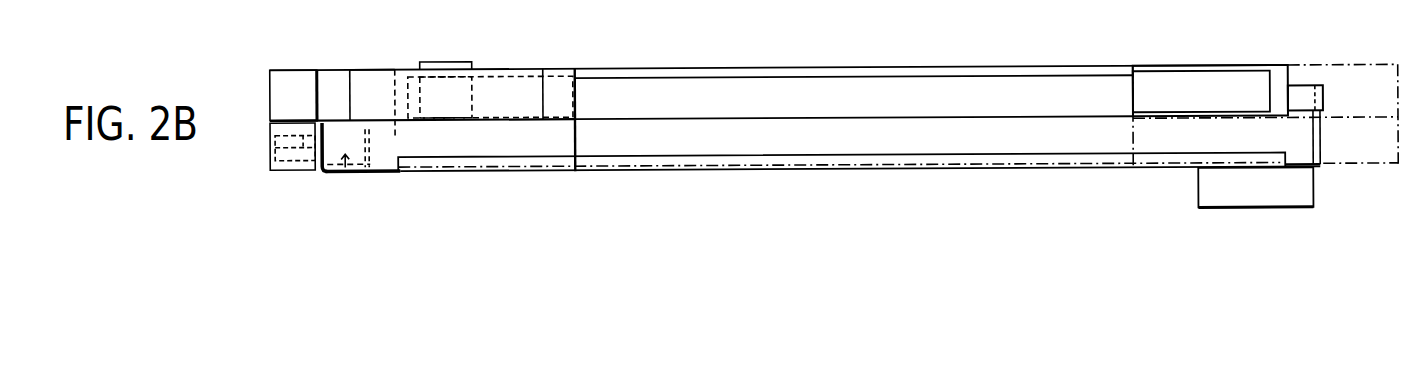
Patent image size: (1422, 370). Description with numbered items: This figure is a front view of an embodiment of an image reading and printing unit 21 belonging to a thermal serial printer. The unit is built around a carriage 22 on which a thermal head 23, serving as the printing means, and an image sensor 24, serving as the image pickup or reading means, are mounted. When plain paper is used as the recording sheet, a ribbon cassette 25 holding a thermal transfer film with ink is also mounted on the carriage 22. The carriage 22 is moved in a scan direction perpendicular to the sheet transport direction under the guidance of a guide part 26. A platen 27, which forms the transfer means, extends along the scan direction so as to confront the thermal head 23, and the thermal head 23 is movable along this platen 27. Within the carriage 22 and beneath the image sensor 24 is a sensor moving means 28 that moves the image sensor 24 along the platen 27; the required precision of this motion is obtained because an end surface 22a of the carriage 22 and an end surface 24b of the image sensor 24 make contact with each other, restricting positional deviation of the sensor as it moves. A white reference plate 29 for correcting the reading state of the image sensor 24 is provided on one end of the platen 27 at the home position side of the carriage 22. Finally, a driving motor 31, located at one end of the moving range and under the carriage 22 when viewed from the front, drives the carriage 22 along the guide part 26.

The image reading and printing unit 21 is at (702, 22).
The carriage 22 is at (575, 142).
The end surface of the carriage 22a is at (290, 128).
The thermal head 23 is at (448, 62).
The image sensor 24 is at (292, 68).
The end surface of the image sensor 24b is at (290, 117).
The ribbon cassette 25 is at (572, 98).
The guide part 26 is at (830, 160).
The platen 27 is at (877, 97).
The sensor moving means 28 is at (345, 175).
The white reference plate 29 is at (372, 75).
The driving motor 31 is at (1265, 198).